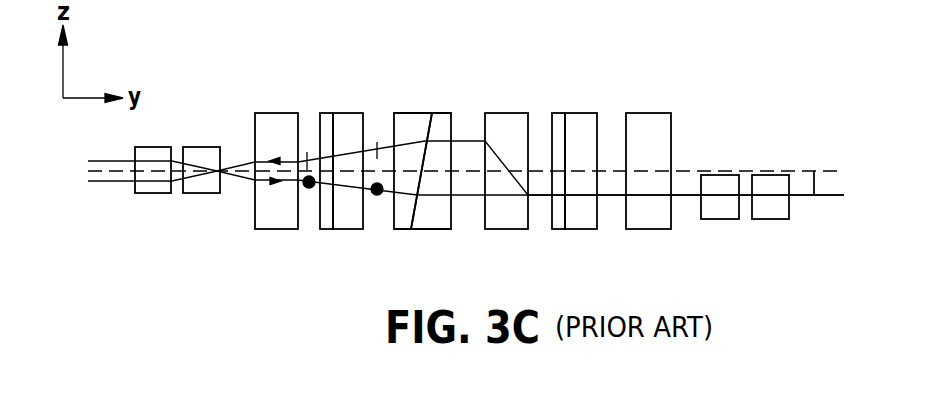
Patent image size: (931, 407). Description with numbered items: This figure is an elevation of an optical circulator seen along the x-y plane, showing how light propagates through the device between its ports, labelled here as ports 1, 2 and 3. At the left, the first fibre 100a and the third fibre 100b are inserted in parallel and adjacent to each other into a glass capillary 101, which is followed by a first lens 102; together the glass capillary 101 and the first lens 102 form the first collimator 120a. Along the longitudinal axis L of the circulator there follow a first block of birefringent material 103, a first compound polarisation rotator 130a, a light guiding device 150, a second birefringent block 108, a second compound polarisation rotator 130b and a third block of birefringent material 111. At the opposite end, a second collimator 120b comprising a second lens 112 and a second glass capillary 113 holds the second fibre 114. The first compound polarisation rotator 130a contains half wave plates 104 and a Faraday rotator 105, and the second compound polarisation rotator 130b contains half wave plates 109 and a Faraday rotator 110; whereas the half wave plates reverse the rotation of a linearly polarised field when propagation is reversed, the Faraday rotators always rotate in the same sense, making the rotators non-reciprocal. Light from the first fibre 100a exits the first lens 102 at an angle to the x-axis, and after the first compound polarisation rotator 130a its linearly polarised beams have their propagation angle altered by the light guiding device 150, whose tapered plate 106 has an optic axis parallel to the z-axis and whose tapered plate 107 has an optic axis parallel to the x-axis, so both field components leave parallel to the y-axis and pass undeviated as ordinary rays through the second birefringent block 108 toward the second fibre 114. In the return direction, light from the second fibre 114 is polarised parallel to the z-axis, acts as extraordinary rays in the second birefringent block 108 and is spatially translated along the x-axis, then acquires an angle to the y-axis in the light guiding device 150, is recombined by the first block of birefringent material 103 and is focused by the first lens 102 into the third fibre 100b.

The first port 1 is at (101, 144).
The second port 2 is at (832, 232).
The third port 3 is at (101, 207).
The longitudinal axis L is at (827, 169).
The first fibre 100a is at (112, 160).
The third fibre 100b is at (113, 182).
The glass capillary 101 is at (153, 147).
The first lens 102 is at (205, 147).
The first block of birefringent material 103 is at (283, 113).
The half wave plates 104 is at (327, 113).
The Faraday rotator 105 is at (350, 113).
The tapered plate 106 is at (420, 113).
The tapered plate 107 is at (443, 113).
The second birefringent block 108 is at (505, 113).
The half wave plates 109 is at (558, 113).
The Faraday rotator 110 is at (588, 113).
The third block of birefringent material 111 is at (648, 113).
The second lens 112 is at (720, 175).
The second glass capillary 113 is at (772, 175).
The second fibre 114 is at (813, 171).
The first collimator 120a is at (183, 206).
The second collimator 120b is at (747, 219).
The first compound polarisation rotator 130a is at (338, 235).
The second compound polarisation rotator 130b is at (573, 235).
The light guiding device 150 is at (418, 235).